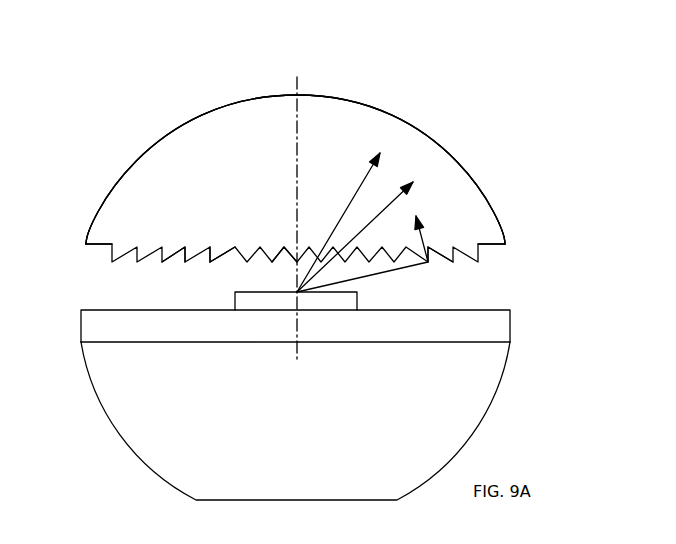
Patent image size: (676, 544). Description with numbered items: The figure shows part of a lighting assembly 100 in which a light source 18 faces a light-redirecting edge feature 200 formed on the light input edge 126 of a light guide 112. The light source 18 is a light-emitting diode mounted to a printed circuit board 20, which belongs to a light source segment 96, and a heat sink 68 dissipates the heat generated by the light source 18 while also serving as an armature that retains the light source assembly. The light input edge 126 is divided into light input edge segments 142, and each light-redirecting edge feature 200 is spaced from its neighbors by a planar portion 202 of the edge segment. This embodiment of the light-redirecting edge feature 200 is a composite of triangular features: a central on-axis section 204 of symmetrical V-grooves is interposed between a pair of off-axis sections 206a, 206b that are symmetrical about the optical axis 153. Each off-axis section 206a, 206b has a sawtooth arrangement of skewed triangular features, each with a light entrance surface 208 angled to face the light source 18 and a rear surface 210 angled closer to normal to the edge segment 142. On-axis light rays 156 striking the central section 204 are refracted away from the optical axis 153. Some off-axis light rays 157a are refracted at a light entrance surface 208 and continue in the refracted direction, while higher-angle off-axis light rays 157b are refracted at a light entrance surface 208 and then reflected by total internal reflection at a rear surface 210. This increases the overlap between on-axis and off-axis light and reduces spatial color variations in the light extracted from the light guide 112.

The lighting assembly 100 is at (227, 57).
The light guide 112 is at (192, 133).
The optical axis 153 is at (297, 78).
The light-redirecting edge feature 200 is at (158, 232).
The planar portion 202 is at (102, 245).
The off-axis section 206a is at (181, 237).
The off-axis section 206b is at (438, 236).
The rear surface 210 is at (212, 250).
The light entrance surface 208 is at (227, 247).
The central on-axis section 204 is at (282, 235).
The on-axis light ray 156 is at (355, 187).
The off-axis light ray 157a is at (402, 202).
The off-axis light ray 157b is at (427, 240).
The light input edge segment 142 is at (87, 245).
The light input edge 126 is at (495, 245).
The light source 18 is at (330, 302).
The light source segment 96 is at (208, 328).
The printed circuit board 20 is at (386, 328).
The heat sink 68 is at (475, 395).